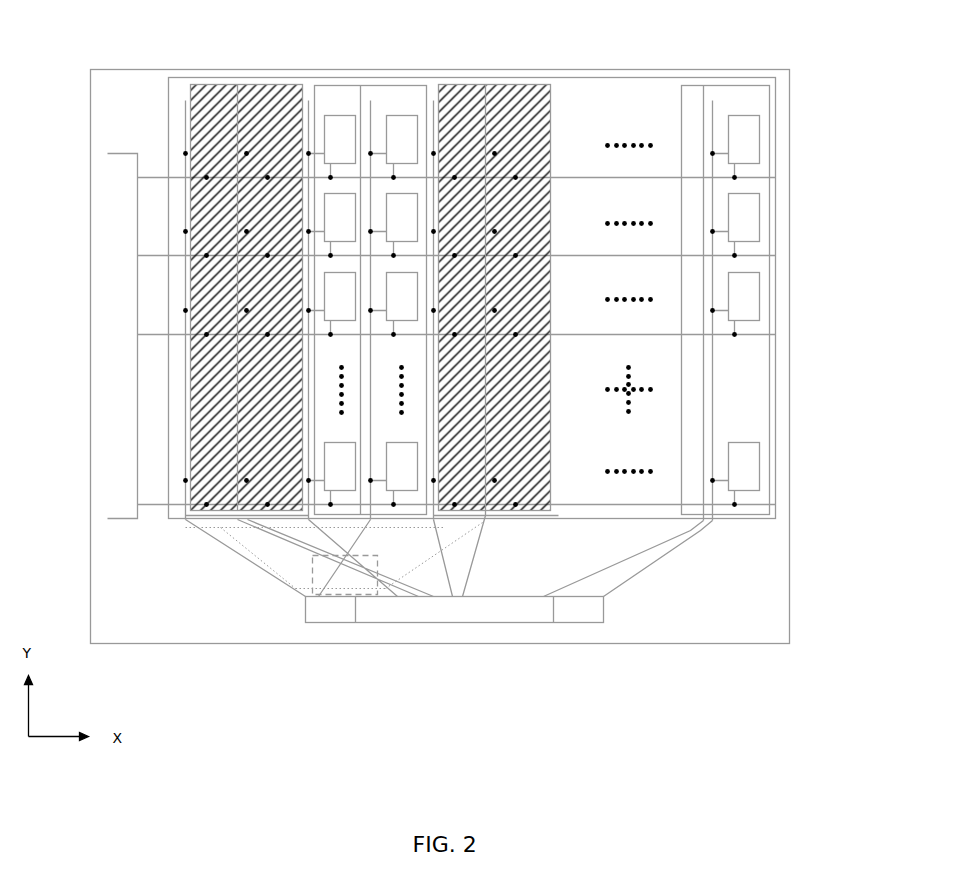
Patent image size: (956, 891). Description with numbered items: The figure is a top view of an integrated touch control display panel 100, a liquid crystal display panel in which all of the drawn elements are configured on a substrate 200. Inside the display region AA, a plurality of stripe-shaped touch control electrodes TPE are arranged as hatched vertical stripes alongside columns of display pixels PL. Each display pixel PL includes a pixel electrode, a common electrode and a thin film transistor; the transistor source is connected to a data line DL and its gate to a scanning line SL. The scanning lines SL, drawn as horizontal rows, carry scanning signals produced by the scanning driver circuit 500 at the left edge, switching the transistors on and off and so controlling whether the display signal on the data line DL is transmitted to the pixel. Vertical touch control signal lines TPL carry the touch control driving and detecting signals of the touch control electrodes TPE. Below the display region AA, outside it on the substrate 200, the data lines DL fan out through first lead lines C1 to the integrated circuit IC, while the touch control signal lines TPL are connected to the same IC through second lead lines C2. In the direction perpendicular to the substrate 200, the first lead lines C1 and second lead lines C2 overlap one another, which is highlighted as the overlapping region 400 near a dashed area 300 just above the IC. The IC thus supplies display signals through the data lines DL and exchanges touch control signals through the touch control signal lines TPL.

The integrated touch control display panel 100 is at (59, 16).
The substrate 200 is at (790, 590).
The bonding region 300 is at (345, 596).
The overlapping region 400 is at (402, 573).
The scanning driver circuit 500 is at (123, 336).
The display region AA is at (775, 101).
The data line DL is at (182, 112).
The scanning line SL is at (177, 177).
The touch control signal line TPL is at (360, 100).
The stripe-shaped touch control electrode TPE is at (368, 85).
The display pixel PL is at (758, 139).
The integrated circuit IC is at (455, 610).
The first lead line C1 is at (225, 545).
The second lead line C2 is at (293, 581).